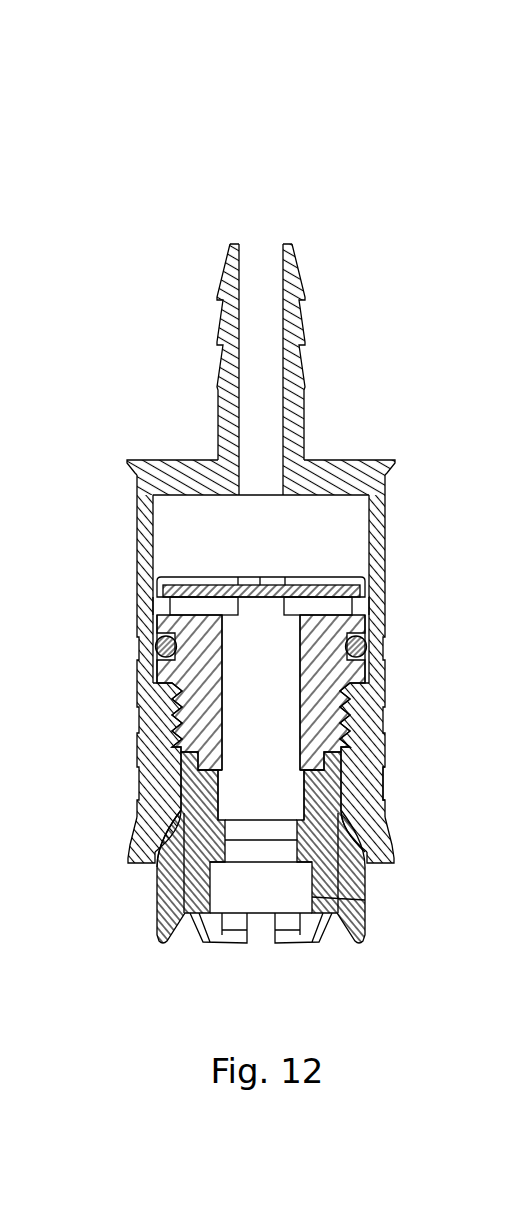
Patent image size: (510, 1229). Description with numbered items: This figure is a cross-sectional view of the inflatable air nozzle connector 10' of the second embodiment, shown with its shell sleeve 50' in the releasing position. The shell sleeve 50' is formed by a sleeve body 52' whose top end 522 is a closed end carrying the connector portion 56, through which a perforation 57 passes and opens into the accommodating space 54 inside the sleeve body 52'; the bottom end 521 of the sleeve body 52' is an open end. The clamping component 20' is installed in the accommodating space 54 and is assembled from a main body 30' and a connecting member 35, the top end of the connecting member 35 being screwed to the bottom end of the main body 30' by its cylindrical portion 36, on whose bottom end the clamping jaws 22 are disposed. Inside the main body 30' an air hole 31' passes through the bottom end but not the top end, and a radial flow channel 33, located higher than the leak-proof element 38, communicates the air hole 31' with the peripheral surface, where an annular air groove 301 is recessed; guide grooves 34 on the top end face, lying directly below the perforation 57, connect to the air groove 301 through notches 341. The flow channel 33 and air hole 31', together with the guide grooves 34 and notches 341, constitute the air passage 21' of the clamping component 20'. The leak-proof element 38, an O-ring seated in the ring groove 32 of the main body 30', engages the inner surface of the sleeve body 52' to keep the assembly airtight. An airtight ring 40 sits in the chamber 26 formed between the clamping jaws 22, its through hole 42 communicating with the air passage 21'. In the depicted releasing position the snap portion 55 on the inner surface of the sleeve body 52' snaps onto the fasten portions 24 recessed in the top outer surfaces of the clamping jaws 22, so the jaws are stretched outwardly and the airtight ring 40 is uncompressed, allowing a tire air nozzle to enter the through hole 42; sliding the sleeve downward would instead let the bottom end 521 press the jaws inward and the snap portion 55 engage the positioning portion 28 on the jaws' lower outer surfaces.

The inflatable air nozzle connector 10' is at (269, 535).
The perforation 57 is at (260, 258).
The connector portion 56 is at (307, 325).
The top end 522 is at (128, 458).
The shell sleeve 50' is at (265, 530).
The accommodating space 54 is at (197, 520).
The flow channel 33 is at (315, 607).
The guide grooves 34 is at (203, 580).
The clamping component 20' is at (271, 616).
The notch 341 is at (160, 590).
The air groove 301 is at (357, 607).
The leak-proof element 38 is at (152, 652).
The sleeve body 52' is at (312, 646).
The ring groove 32 is at (180, 672).
The main body 30' is at (271, 616).
The air passage 21' is at (174, 692).
The cylindrical portion 36 is at (160, 733).
The air hole 31' is at (341, 751).
The connecting member 35 is at (153, 777).
The fasten portion 24 is at (383, 798).
The airtight ring 40 is at (198, 835).
The snap portion 55 is at (360, 822).
The bottom end 521 is at (128, 865).
The clamping jaws 22 is at (155, 885).
The chamber 26 is at (367, 900).
The positioning portion 28 is at (155, 907).
The through hole 42 is at (261, 805).